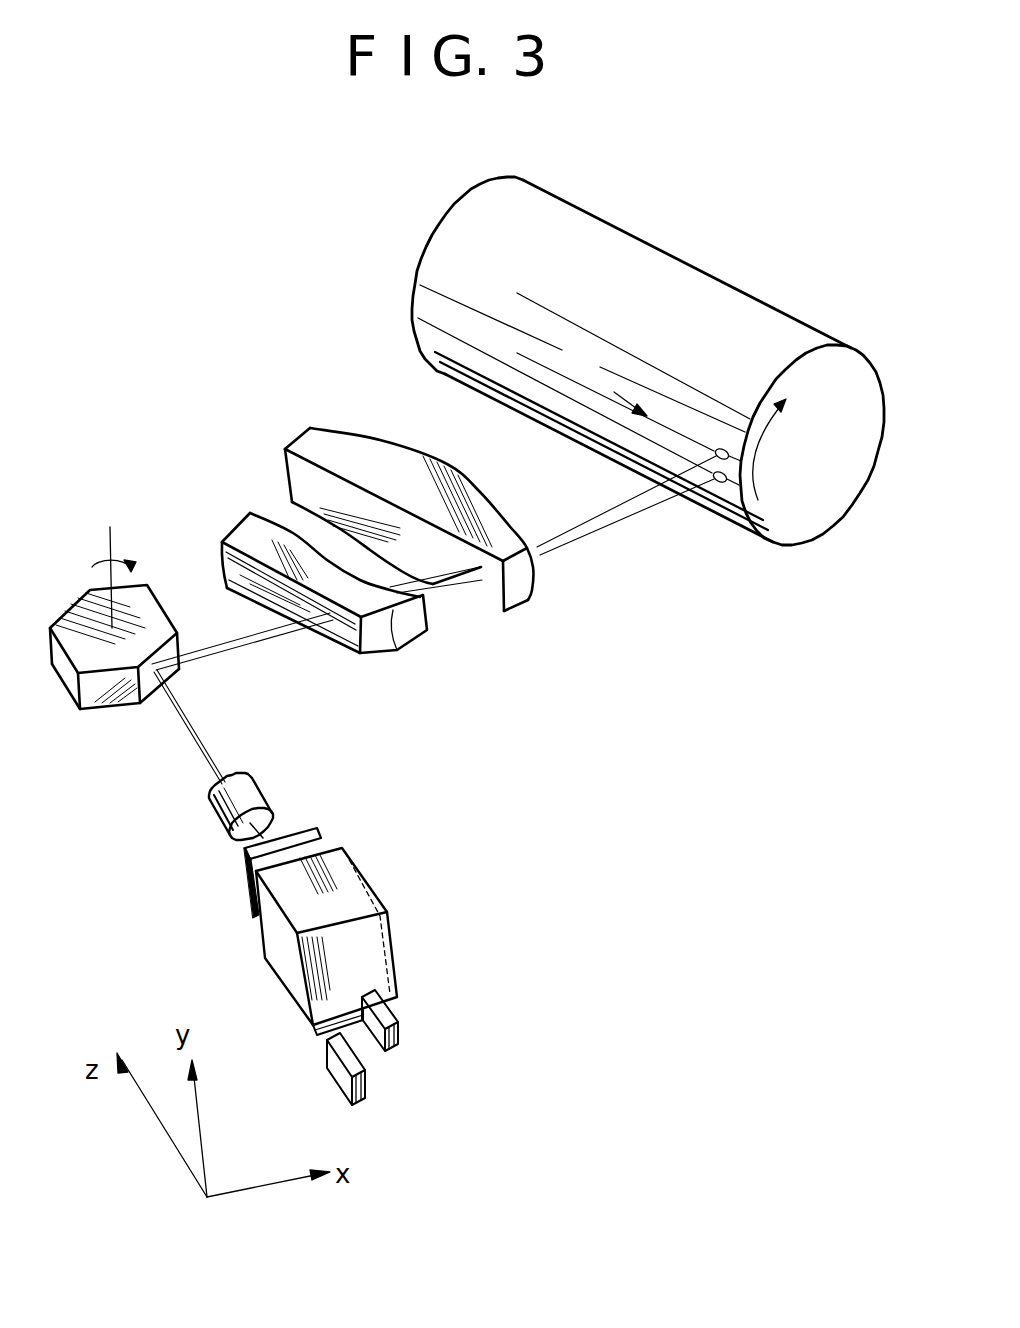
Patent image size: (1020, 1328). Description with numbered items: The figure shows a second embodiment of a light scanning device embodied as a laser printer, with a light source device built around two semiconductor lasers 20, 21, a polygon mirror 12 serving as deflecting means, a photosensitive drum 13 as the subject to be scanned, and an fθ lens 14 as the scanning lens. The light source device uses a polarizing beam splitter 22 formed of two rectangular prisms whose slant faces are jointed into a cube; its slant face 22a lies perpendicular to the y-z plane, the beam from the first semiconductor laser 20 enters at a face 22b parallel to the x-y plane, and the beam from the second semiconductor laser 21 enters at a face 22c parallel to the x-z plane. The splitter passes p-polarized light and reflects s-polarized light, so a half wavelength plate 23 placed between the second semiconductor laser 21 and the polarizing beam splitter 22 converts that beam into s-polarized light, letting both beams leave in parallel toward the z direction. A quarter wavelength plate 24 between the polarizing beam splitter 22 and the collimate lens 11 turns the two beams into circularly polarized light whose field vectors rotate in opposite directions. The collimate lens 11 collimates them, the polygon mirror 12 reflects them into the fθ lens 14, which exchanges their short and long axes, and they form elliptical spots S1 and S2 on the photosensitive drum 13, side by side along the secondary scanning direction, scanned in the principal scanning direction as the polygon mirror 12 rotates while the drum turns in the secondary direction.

The collimate lens 11 is at (250, 797).
The polygon mirror 12 is at (123, 698).
The photosensitive drum 13 is at (425, 279).
The fθ lens 14 is at (549, 609).
The first semiconductor laser 20 is at (397, 1035).
The second semiconductor laser 21 is at (336, 1080).
The polarizing beam splitter 22 is at (345, 925).
The slant face 22a is at (350, 903).
The face 22b is at (387, 947).
The face 22c is at (280, 968).
The half wavelength plate 23 is at (313, 1033).
The quarter wavelength plate 24 is at (305, 828).
The spot S1 is at (722, 446).
The spot S2 is at (719, 484).